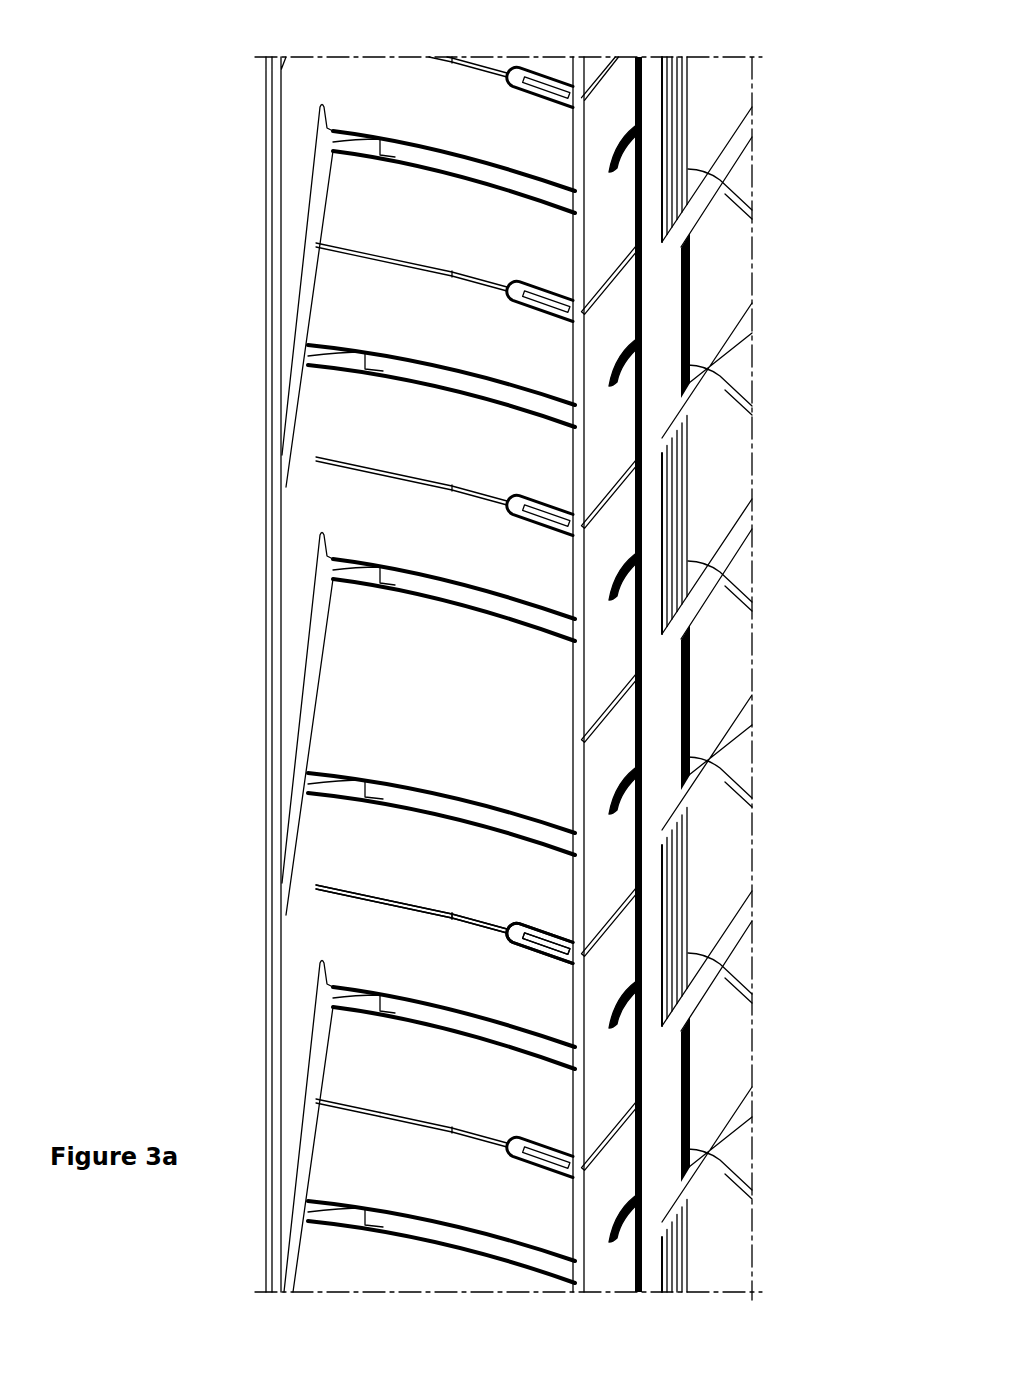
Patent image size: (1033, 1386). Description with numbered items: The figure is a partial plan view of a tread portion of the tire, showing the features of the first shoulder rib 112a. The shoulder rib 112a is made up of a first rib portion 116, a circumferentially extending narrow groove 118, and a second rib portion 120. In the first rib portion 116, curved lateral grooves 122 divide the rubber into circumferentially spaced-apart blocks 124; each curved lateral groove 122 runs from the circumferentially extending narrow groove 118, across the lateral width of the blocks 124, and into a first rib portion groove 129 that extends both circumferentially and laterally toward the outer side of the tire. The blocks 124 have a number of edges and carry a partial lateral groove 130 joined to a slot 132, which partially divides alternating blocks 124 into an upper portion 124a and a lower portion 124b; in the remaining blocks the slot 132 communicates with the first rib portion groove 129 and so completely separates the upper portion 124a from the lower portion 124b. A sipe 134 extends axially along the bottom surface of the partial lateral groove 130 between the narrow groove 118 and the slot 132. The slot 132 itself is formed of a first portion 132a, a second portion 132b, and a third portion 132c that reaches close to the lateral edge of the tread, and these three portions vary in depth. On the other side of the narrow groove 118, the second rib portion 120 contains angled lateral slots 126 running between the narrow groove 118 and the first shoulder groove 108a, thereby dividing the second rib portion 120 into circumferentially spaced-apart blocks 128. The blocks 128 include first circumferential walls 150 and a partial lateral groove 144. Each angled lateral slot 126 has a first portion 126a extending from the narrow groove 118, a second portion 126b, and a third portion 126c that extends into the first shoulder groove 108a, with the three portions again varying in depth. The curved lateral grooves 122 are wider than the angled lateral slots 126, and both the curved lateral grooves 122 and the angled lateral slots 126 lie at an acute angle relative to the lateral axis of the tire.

The first shoulder groove 108a is at (655, 72).
The first shoulder rib 112a is at (536, 64).
The first rib portion 116 is at (380, 89).
The circumferentially extending narrow groove 118 is at (622, 68).
The second rib portion 120 is at (641, 66).
The curved lateral grooves 122 is at (382, 150).
The blocks 124 is at (422, 454).
The upper portion 124a is at (350, 649).
The lower portion 124b is at (359, 749).
The angled lateral slots 126 is at (642, 278).
The first portion 126a is at (588, 315).
The second portion 126b is at (620, 478).
The third portion 126c is at (632, 482).
The blocks 128 is at (627, 763).
The first rib portion groove 129 is at (302, 290).
The partial lateral groove 130 is at (530, 731).
The slot 132 is at (425, 690).
The first portion 132a is at (480, 1128).
The second portion 132b is at (400, 1116).
The third portion 132c is at (355, 1100).
The sipe 134 is at (541, 745).
The partial lateral groove 144 is at (642, 564).
The first circumferential walls 150 is at (650, 806).